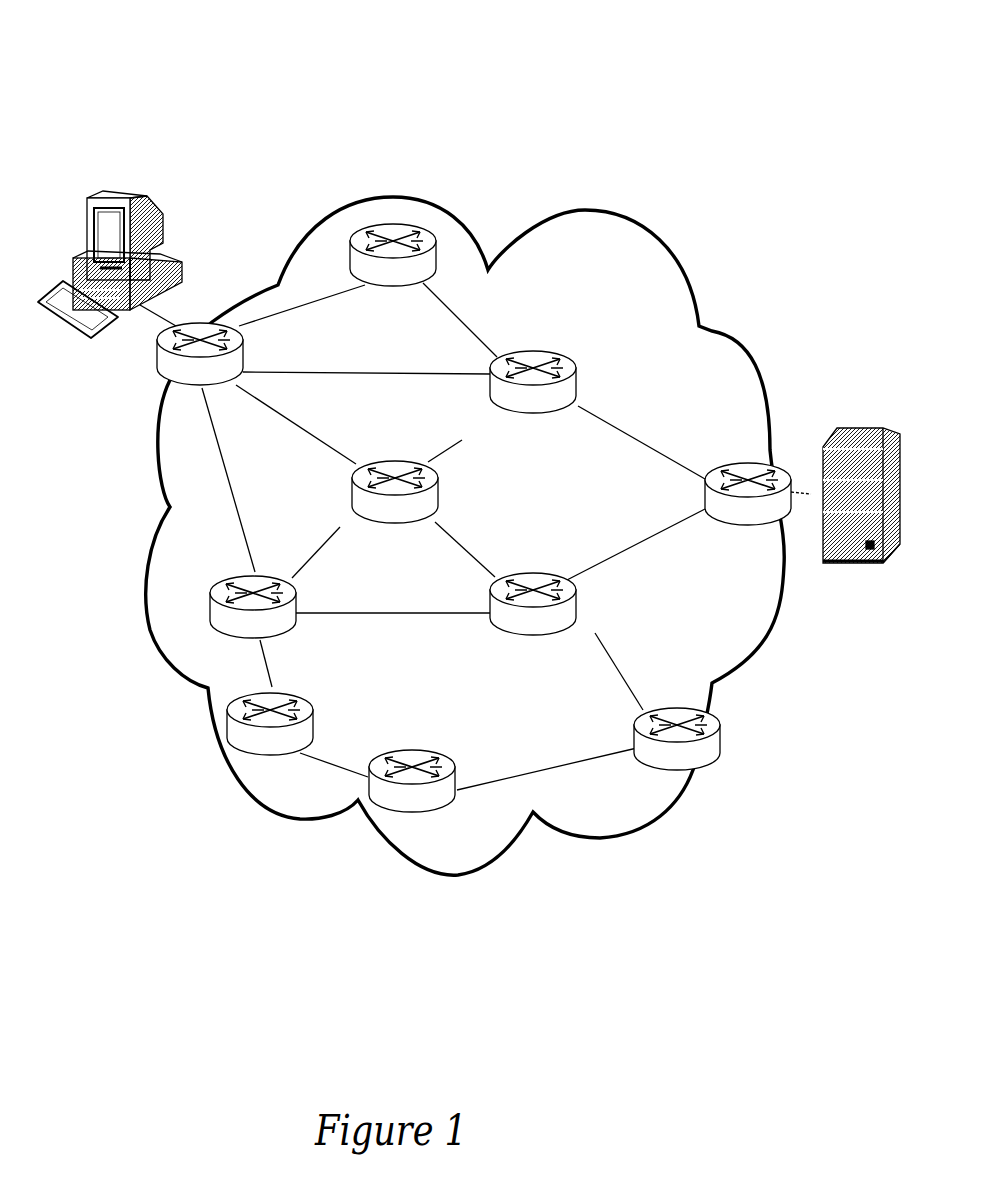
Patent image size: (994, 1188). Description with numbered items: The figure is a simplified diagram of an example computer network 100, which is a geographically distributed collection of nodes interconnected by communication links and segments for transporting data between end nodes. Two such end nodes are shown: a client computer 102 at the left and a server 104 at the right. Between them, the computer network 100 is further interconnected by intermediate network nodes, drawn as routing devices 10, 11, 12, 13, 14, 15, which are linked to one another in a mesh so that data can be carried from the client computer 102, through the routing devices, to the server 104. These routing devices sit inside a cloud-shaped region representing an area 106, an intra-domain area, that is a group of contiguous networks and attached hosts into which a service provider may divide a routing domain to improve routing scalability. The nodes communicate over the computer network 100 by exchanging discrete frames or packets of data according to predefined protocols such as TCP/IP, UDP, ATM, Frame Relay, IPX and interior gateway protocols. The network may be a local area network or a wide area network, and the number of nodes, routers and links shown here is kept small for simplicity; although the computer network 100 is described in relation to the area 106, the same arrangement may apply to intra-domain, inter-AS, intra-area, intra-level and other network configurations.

The computer network 100 is at (669, 91).
The client computer 102 is at (107, 292).
The server 104 is at (860, 509).
The area 106 is at (694, 303).
The routing device 10 is at (253, 607).
The routing device 11 is at (474, 489).
The routing device 12 is at (412, 781).
The routing device 13 is at (395, 492).
The routing device 14 is at (677, 739).
The routing device 15 is at (533, 604).